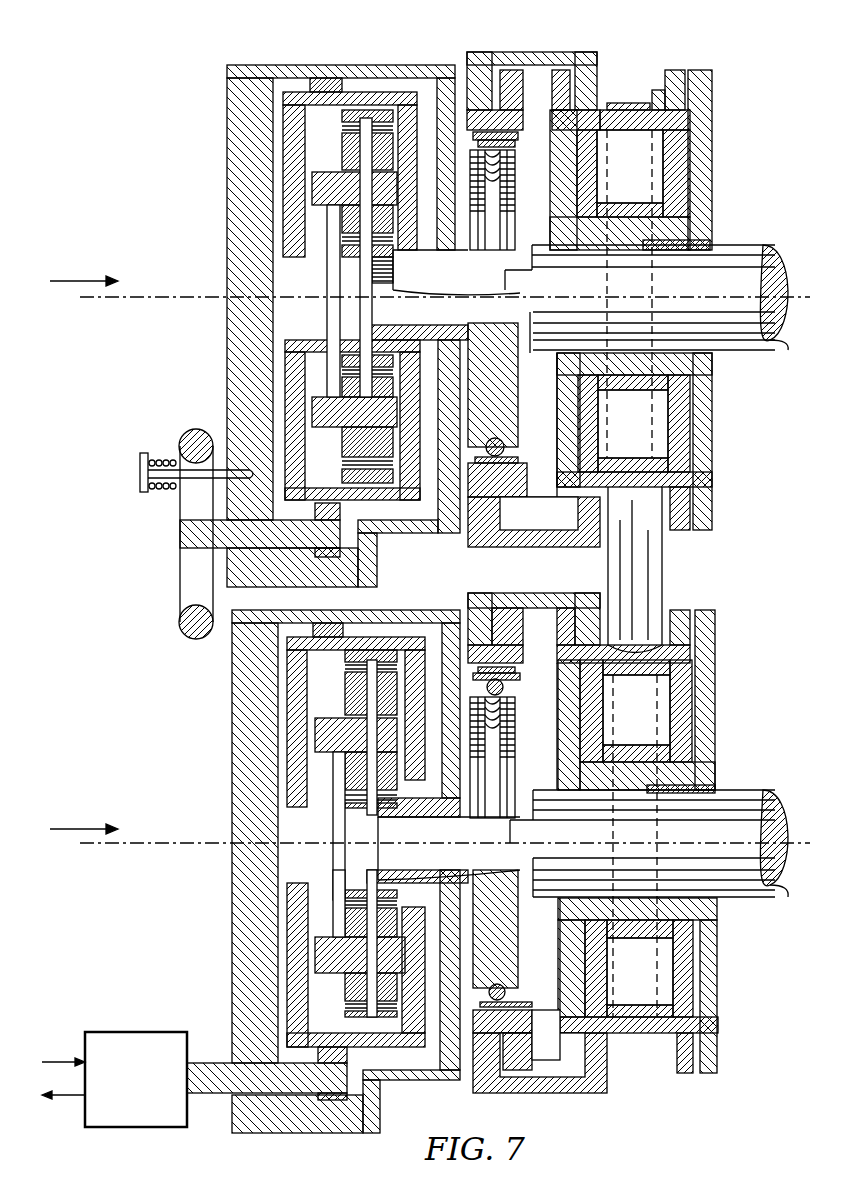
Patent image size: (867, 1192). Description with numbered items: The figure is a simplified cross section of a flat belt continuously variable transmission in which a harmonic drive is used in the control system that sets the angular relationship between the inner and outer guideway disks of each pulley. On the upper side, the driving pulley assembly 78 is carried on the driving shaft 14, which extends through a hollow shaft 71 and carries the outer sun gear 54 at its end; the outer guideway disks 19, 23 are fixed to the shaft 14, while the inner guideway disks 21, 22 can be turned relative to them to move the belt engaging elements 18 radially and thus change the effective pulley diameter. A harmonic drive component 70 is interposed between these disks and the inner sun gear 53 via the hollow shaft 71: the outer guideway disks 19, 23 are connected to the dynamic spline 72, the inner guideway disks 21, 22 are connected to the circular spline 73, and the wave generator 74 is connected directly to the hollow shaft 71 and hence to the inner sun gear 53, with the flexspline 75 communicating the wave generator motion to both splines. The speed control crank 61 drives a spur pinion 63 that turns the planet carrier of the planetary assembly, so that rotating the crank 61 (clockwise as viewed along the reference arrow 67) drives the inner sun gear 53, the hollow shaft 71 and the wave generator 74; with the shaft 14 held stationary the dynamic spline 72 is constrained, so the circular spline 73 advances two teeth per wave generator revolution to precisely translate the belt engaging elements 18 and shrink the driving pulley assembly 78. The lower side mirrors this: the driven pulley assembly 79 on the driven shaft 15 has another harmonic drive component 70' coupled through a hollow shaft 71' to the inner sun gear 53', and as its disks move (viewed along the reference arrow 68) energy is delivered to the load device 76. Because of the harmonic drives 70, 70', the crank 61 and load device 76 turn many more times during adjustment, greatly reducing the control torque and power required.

The driving shaft 14 is at (745, 262).
The driven shaft 15 is at (748, 800).
The belt engaging elements 18 is at (642, 108).
The outer guideway disk 19 is at (712, 137).
The inner guideway disk 21 is at (680, 70).
The inner guideway disk 22 is at (597, 78).
The outer guideway disk 23 is at (560, 77).
The inner sun gear 53 is at (343, 201).
The inner sun gear 53' is at (402, 833).
The outer sun gear 54 is at (350, 312).
The speed control crank 61 is at (186, 632).
The spur pinion 63 is at (315, 563).
The reference arrow 67 is at (430, 277).
The reference arrow 68 is at (430, 819).
The harmonic drive component 70 is at (508, 197).
The harmonic drive component 70' is at (513, 845).
The hollow shaft 71 is at (456, 272).
The hollow shaft 71' is at (449, 845).
The dynamic spline 72 is at (510, 107).
The circular spline 73 is at (476, 105).
The wave generator 74 is at (470, 190).
The flexspline 75 is at (476, 188).
The load device 76 is at (138, 1032).
The driving pulley assembly 78 is at (733, 378).
The driven pulley assembly 79 is at (733, 908).